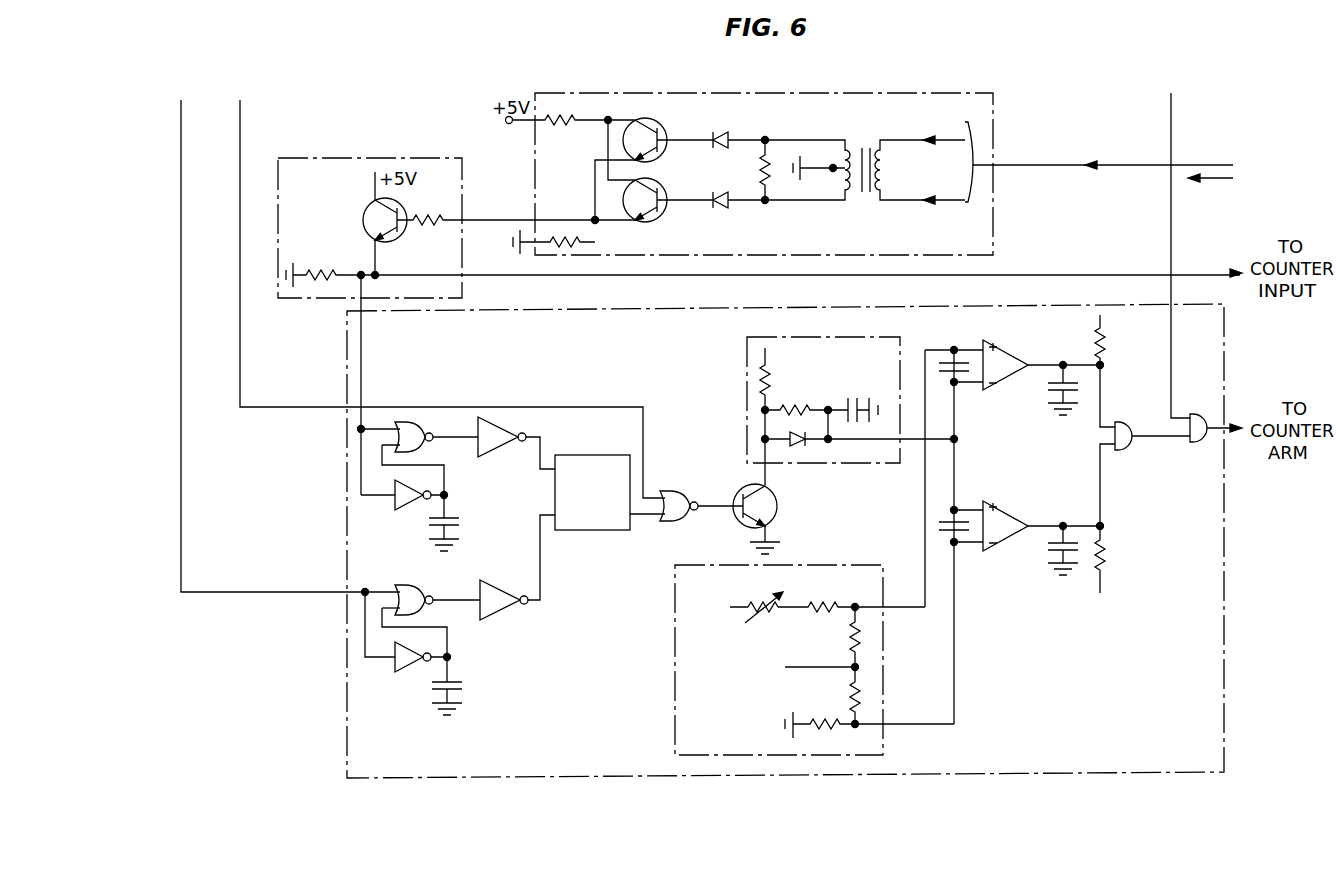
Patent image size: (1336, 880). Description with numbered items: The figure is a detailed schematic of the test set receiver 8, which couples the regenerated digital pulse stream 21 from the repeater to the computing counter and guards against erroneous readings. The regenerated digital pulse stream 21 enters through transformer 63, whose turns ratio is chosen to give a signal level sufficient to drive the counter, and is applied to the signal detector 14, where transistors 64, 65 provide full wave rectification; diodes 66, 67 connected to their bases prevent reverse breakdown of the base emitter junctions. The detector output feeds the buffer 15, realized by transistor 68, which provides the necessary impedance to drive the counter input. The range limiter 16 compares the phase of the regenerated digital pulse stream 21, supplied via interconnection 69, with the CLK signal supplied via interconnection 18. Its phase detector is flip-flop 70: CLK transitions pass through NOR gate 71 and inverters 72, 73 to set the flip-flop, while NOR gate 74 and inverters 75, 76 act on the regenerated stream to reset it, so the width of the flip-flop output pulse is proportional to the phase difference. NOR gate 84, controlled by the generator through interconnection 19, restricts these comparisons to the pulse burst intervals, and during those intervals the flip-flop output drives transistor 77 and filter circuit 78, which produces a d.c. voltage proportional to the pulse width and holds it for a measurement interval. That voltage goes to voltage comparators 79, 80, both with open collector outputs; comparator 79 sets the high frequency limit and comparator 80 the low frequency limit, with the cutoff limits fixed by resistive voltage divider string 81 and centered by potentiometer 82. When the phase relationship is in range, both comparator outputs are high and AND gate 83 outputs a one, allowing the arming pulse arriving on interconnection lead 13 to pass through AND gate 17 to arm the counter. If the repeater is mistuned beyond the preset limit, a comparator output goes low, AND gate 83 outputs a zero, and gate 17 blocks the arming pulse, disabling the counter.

The test set receiver 8 is at (830, 71).
The interconnection lead 13 is at (1173, 113).
The signal detector 14 is at (993, 120).
The buffer 15 is at (292, 299).
The range limiter 16 is at (1101, 748).
The AND gate 17 is at (1197, 447).
The interconnection 18 is at (184, 105).
The interconnection 19 is at (243, 105).
The regenerated digital pulse stream 21 is at (1210, 188).
The transformer 63 is at (877, 134).
The transistor 64 is at (660, 125).
The transistor 65 is at (658, 218).
The diode 66 is at (722, 131).
The diode 67 is at (724, 208).
The transistor 68 is at (363, 224).
The interconnection 69 is at (363, 347).
The flip-flop 70 is at (587, 553).
The NOR gate 71 is at (409, 585).
The inverter 72 is at (496, 620).
The inverter 73 is at (405, 672).
The NOR gate 74 is at (416, 426).
The inverter 75 is at (396, 510).
The inverter 76 is at (503, 447).
The transistor 77 is at (778, 500).
The filter circuit 78 is at (745, 362).
The voltage comparator 79 is at (998, 340).
The voltage comparator 80 is at (1001, 500).
The resistive voltage divider string 81 is at (675, 703).
The potentiometer 82 is at (766, 616).
The AND gate 83 is at (1124, 450).
The NOR gate 84 is at (680, 490).